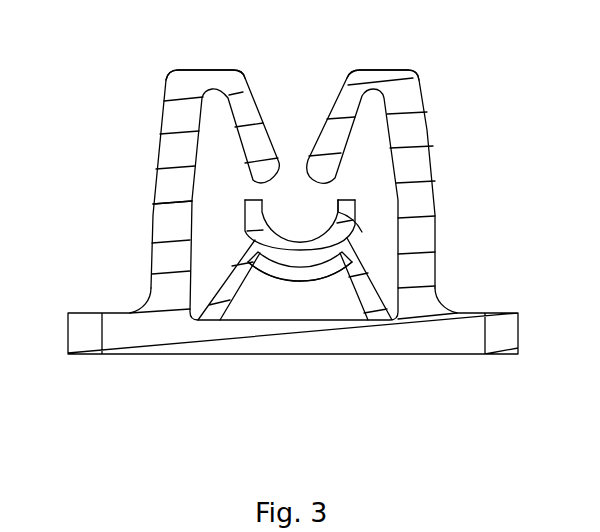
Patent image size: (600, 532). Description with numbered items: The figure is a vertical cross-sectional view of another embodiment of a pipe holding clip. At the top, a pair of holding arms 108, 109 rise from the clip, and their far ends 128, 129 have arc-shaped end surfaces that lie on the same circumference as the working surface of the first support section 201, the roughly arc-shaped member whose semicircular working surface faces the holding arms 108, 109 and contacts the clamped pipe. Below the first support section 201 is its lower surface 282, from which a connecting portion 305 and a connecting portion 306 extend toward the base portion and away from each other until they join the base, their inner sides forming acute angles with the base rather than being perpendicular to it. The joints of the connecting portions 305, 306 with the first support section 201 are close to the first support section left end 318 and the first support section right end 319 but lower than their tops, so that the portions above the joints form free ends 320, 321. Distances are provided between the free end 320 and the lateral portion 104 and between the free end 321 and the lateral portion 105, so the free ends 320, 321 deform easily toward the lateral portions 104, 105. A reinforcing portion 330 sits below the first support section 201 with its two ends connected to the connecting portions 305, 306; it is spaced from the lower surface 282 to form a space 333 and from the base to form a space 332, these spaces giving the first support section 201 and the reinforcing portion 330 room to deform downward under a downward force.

The lateral portion 104 is at (165, 260).
The lateral portion 105 is at (420, 272).
The holding arm 108 is at (238, 110).
The holding arm 109 is at (343, 100).
The far end 128 is at (262, 158).
The far end 129 is at (322, 160).
The first support section 201 is at (343, 277).
The lower surface 282 is at (307, 262).
The connecting portion 305 is at (222, 291).
The connecting portion 306 is at (372, 301).
The first support section left end 318 is at (243, 200).
The first support section right end 319 is at (345, 210).
The free end 320 is at (243, 213).
The free end 321 is at (357, 232).
The reinforcing portion 330 is at (268, 276).
The space 332 is at (280, 300).
The space 333 is at (310, 258).